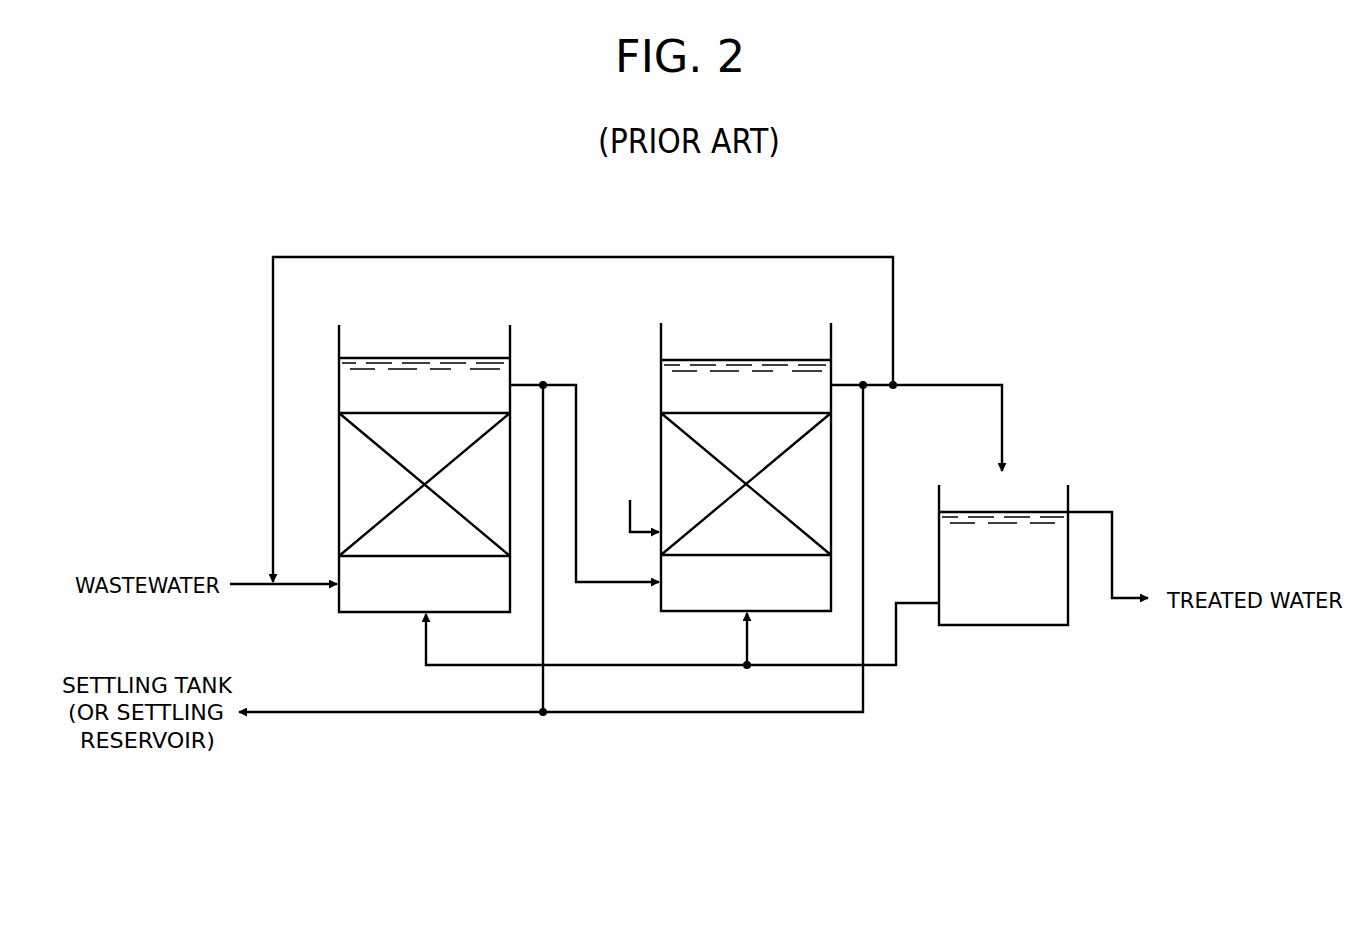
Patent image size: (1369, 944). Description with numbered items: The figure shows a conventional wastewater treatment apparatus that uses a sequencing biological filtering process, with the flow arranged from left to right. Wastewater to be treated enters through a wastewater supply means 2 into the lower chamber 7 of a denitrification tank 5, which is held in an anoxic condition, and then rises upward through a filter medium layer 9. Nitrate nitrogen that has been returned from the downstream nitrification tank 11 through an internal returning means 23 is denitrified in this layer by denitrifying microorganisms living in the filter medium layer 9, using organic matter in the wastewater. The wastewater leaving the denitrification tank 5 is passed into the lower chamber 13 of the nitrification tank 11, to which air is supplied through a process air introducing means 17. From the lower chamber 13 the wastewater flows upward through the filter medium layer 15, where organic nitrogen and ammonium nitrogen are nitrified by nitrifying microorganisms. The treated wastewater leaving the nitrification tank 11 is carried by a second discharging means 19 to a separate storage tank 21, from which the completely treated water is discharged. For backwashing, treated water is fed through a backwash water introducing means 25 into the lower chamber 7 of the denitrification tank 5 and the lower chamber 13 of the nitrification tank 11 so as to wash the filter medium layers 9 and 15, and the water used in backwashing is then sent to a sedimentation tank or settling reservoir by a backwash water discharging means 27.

The wastewater supply means 2 is at (296, 590).
The denitrification tank 5 is at (339, 342).
The lower chamber 7 is at (377, 598).
The filter medium layer 9 is at (350, 464).
The nitrification tank 11 is at (661, 340).
The lower chamber 13 is at (700, 598).
The filter medium layer 15 is at (672, 463).
The process air introducing means 17 is at (627, 530).
The second discharging means 19 is at (948, 385).
The storage tank 21 is at (1070, 500).
The internal returning means 23 is at (748, 256).
The backwash water introducing means 25 is at (896, 665).
The backwash water discharging means 27 is at (427, 718).